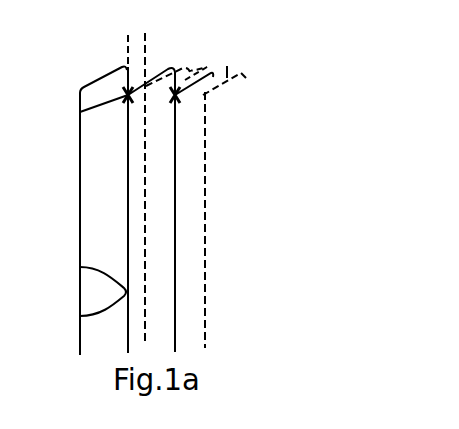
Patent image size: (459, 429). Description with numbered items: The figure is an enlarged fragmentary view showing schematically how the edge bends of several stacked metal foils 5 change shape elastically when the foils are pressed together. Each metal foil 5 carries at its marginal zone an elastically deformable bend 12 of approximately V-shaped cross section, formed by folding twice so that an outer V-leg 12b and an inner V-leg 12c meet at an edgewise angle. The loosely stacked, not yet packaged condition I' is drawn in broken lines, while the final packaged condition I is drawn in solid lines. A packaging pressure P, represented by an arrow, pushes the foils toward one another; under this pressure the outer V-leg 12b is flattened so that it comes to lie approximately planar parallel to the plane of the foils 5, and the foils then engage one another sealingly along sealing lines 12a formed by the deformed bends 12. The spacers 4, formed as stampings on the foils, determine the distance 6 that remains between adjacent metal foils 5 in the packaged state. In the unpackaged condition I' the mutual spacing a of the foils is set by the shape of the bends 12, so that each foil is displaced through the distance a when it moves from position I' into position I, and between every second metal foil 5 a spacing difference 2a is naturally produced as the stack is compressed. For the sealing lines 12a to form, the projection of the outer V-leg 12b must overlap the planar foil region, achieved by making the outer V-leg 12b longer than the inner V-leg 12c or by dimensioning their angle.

The edge bend 12 is at (101, 78).
The sealing line 12a is at (80, 112).
The outer V-leg 12b is at (250, 77).
The inner V-leg 12c is at (227, 72).
The spacer 4 is at (111, 277).
The metal foil 5 is at (80, 248).
The distance 6 is at (127, 128).
The mutual spacing a is at (165, 35).
The spacing difference 2a is at (230, 222).
The packaged condition I is at (117, 187).
The unpackaged condition I' is at (218, 184).
The packaging pressure P is at (207, 145).